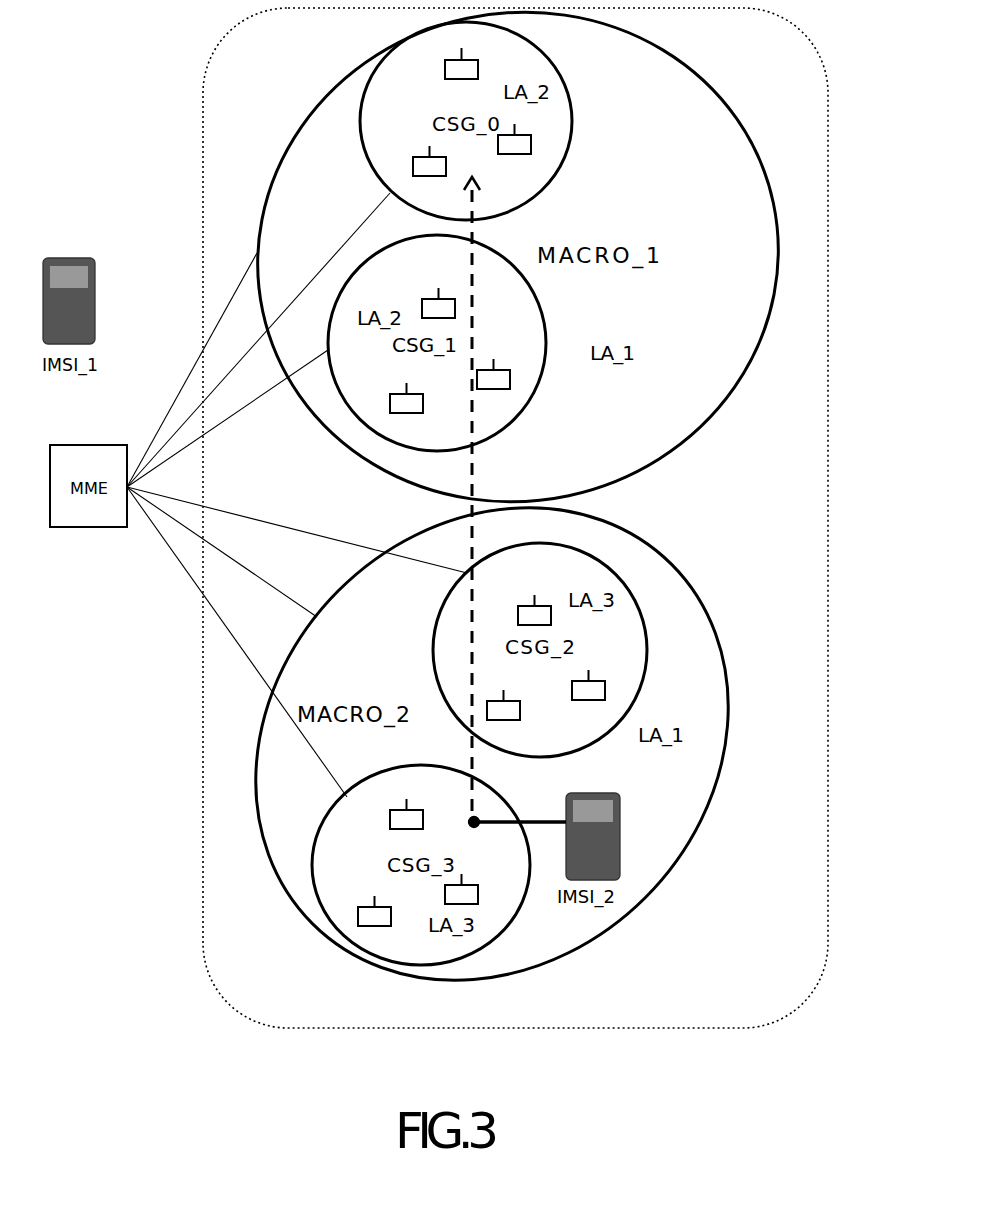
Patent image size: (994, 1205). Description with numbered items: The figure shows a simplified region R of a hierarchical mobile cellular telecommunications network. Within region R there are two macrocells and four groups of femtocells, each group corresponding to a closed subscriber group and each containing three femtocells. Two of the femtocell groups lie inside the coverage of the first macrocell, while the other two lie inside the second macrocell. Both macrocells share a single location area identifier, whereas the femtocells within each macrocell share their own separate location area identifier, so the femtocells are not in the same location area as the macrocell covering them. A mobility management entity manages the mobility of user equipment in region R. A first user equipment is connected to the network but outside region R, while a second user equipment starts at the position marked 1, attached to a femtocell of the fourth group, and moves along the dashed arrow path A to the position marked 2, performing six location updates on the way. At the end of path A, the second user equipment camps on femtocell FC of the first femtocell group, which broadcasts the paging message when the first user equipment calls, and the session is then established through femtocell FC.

The initial position 1 is at (507, 814).
The final position 2 is at (472, 169).
The path A is at (470, 477).
The region R is at (772, 502).
The femtocell FC is at (530, 145).